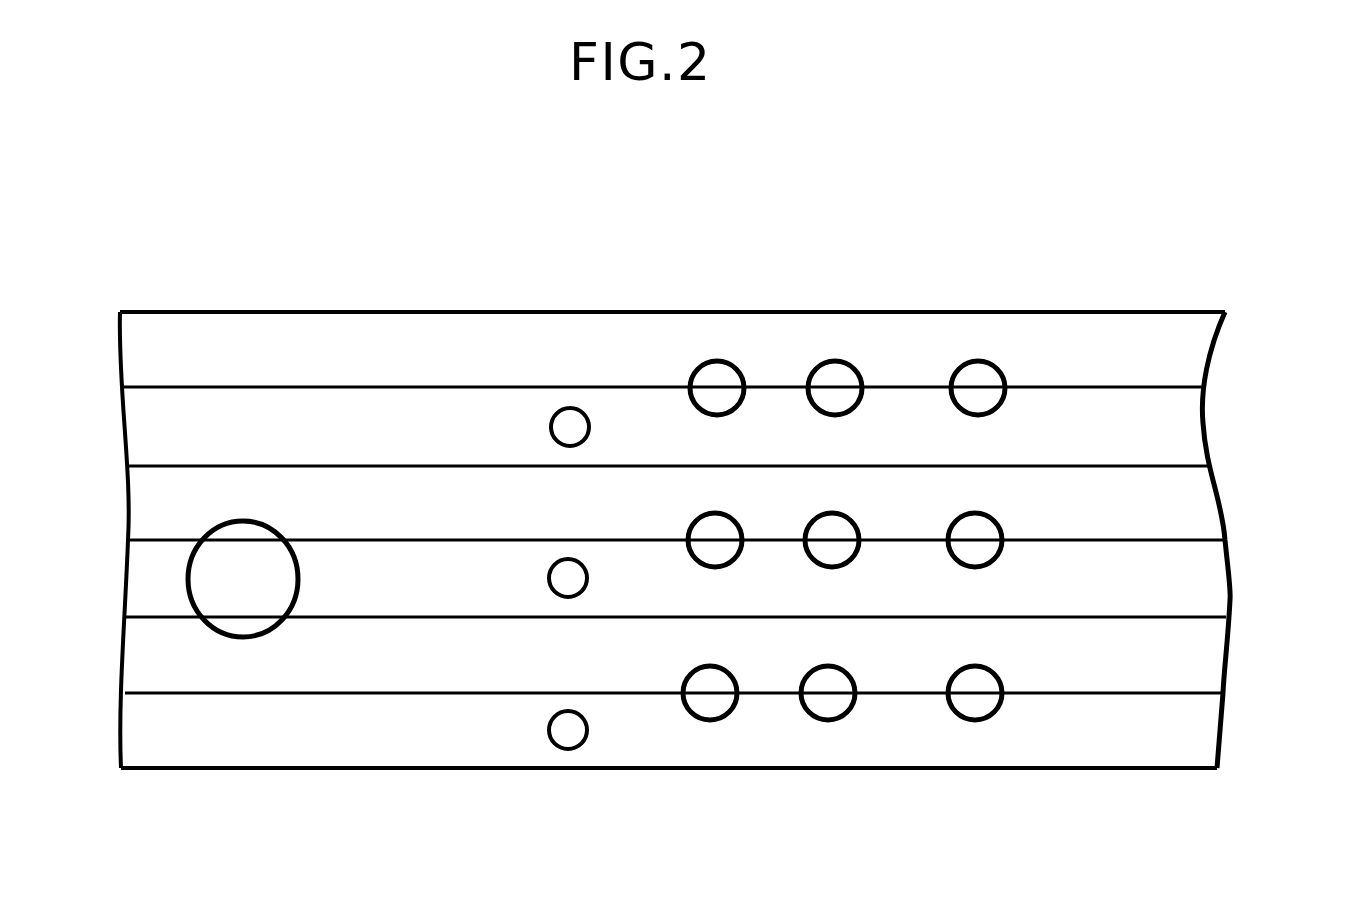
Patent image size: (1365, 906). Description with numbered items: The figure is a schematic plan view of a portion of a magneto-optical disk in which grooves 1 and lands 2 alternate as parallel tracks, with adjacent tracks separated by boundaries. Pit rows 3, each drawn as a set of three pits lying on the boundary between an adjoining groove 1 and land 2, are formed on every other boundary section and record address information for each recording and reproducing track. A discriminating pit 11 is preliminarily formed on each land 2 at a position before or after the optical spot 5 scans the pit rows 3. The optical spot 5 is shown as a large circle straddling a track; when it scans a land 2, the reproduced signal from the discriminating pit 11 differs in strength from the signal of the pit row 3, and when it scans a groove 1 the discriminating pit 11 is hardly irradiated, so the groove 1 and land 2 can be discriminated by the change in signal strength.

The groove 1 is at (1198, 362).
The land 2 is at (1190, 441).
The pit row 3 is at (738, 367).
The optical spot 5 is at (262, 522).
The discriminating pit 11 is at (551, 424).